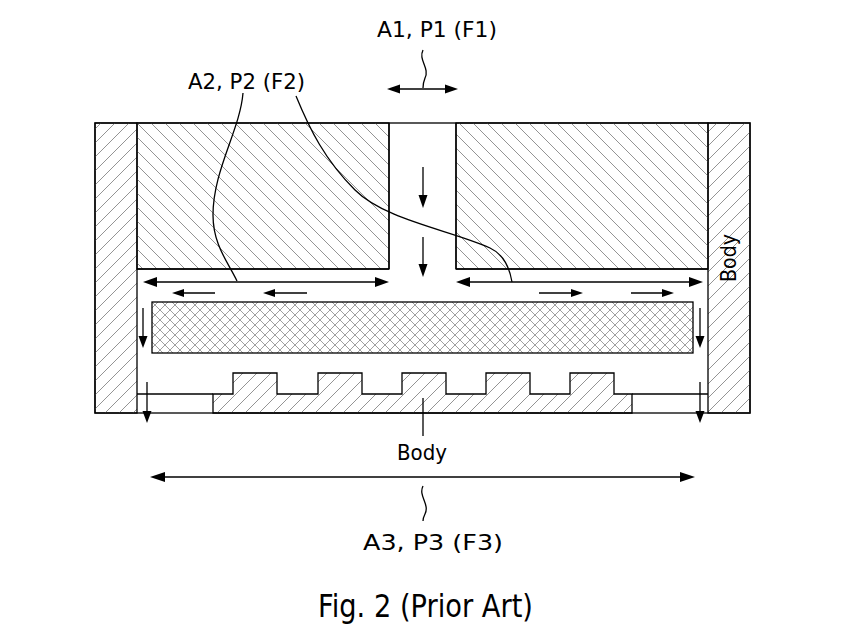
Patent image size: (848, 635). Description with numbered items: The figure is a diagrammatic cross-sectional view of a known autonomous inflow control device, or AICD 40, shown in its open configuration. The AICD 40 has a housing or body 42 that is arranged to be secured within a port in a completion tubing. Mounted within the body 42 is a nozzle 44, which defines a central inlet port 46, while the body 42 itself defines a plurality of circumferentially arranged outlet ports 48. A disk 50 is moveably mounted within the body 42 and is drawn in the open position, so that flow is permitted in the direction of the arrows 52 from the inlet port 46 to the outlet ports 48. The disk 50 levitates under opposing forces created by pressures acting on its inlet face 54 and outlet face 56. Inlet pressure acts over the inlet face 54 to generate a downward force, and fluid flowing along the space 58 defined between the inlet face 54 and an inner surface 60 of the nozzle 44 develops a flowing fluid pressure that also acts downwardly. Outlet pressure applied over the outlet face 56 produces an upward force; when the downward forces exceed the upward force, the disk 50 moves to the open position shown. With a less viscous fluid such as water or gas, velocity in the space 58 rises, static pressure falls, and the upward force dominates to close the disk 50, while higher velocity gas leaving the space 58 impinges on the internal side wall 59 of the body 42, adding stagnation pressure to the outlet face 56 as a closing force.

The AICD 40 is at (98, 77).
The body 42 is at (120, 160).
The nozzle 44 is at (676, 148).
The inlet port 46 is at (423, 130).
The outlet ports 48 is at (176, 403).
The disk 50 is at (682, 328).
The arrows 52 is at (423, 178).
The inlet face 54 is at (657, 268).
The outlet face 56 is at (682, 355).
The space 58 is at (232, 292).
The internal side wall 59 is at (137, 292).
The inner surface 60 is at (193, 269).